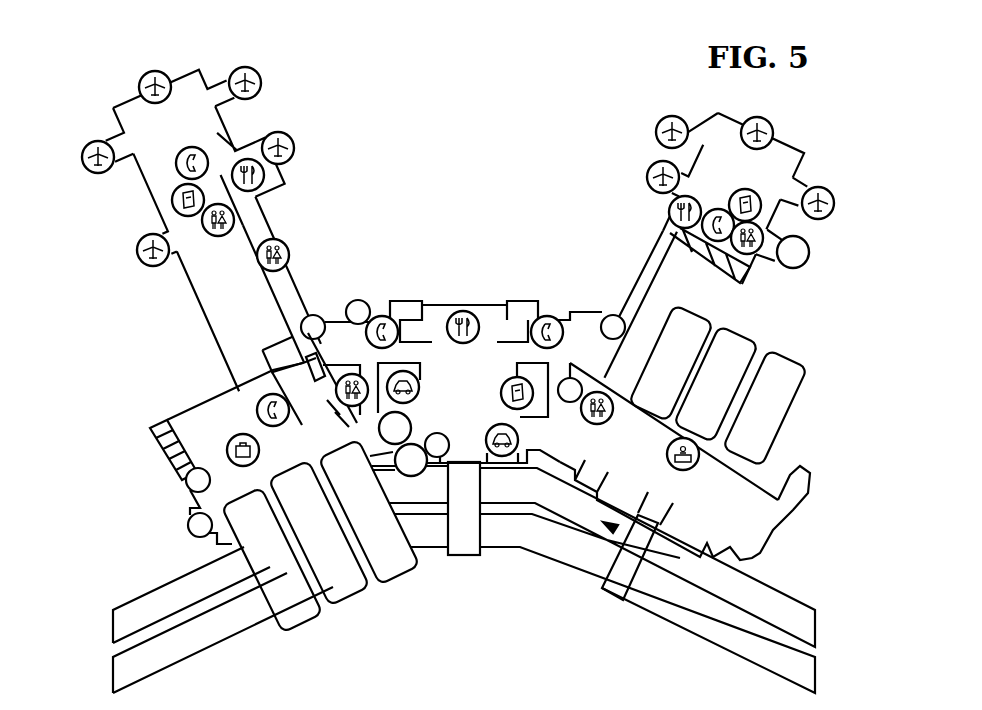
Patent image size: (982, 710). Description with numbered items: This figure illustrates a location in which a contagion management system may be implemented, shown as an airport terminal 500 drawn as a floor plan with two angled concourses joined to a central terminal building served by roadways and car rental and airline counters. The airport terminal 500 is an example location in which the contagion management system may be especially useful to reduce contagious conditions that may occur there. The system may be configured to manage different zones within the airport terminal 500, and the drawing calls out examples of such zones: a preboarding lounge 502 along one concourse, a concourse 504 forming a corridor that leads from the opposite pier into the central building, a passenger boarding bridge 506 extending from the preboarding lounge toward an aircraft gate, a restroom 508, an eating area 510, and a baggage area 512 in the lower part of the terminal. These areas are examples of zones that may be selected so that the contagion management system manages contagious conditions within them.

The airport terminal 500 is at (649, 113).
The preboarding lounge 502 is at (785, 152).
The concourse 504 is at (304, 297).
The passenger boarding bridge 506 is at (803, 182).
The restroom 508 is at (208, 238).
The eating area 510 is at (660, 207).
The baggage area 512 is at (220, 422).